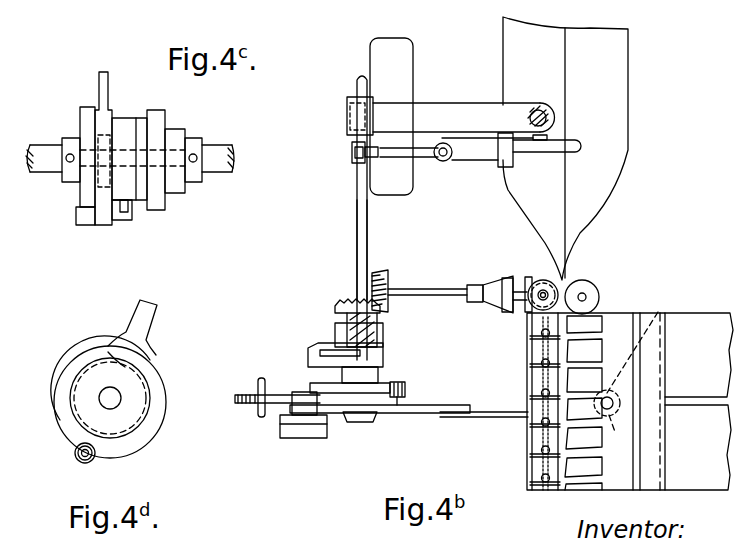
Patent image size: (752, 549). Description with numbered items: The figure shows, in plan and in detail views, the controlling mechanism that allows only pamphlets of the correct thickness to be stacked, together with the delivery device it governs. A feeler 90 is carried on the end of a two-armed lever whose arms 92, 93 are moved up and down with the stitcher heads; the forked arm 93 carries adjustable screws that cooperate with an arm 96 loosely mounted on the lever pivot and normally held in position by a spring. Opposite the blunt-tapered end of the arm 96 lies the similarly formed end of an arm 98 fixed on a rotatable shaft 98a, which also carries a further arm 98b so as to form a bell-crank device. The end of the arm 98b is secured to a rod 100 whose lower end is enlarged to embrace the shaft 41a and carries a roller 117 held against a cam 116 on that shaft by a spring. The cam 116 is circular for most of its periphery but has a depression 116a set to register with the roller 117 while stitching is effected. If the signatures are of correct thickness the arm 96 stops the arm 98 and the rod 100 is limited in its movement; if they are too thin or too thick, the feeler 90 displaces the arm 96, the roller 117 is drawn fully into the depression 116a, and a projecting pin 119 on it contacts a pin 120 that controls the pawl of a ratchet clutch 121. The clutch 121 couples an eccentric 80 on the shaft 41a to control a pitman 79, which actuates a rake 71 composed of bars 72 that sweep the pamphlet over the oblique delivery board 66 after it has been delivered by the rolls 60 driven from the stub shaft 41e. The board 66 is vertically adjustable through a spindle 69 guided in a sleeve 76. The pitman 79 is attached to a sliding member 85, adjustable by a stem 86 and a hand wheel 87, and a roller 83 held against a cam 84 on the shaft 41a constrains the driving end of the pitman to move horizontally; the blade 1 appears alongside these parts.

In FIG. 4B, the blade 1 is at (615, 162).
In FIG. 4C, the shaft 41a is at (45, 167).
In FIG. 4B, the shaft 41a is at (360, 85).
In FIG. 4B, the stub shaft 41e is at (442, 289).
In FIG. 4B, the rolls 60 is at (566, 282).
In FIG. 4B, the oblique delivery board 66 is at (713, 327).
In FIG. 4B, the vertical spindle 69 is at (614, 427).
In FIG. 4B, the rake 71 is at (540, 437).
In FIG. 4B, the bars 72 is at (537, 363).
In FIG. 4B, the sleeve 76 is at (645, 360).
In FIG. 4B, the pitman 79 is at (485, 413).
In FIG. 4B, the eccentric 80 is at (387, 413).
In FIG. 4B, the roller 83 is at (406, 390).
In FIG. 4C, the cam 84 is at (158, 205).
In FIG. 4B, the cam 84 is at (378, 384).
In FIG. 4B, the sliding member 85 is at (287, 404).
In FIG. 4B, the stem 86 is at (240, 405).
In FIG. 4B, the hand wheel 87 is at (258, 378).
In FIG. 4B, the feeler 90 is at (582, 142).
In FIG. 4B, the lever arm 92 is at (532, 152).
In FIG. 4B, the forked lever arm 93 is at (443, 162).
In FIG. 4B, the arm 96 is at (480, 162).
In FIG. 4B, the arm 98 is at (352, 162).
In FIG. 4B, the rotatable shaft 98a is at (359, 240).
In FIG. 4B, the arm 98b is at (316, 343).
In FIG. 4D, the rod 100 is at (147, 310).
In FIG. 4B, the rod 100 is at (310, 362).
In FIG. 4C, the cam 116 is at (88, 112).
In FIG. 4D, the cam 116 is at (150, 426).
In FIG. 4D, the depression 116a is at (124, 363).
In FIG. 4C, the roller 117 is at (82, 226).
In FIG. 4D, the roller 117 is at (97, 460).
In FIG. 4C, the projecting pin 119 is at (125, 222).
In FIG. 4C, the pin 120 is at (128, 210).
In FIG. 4C, the ratchet clutch 121 is at (125, 118).